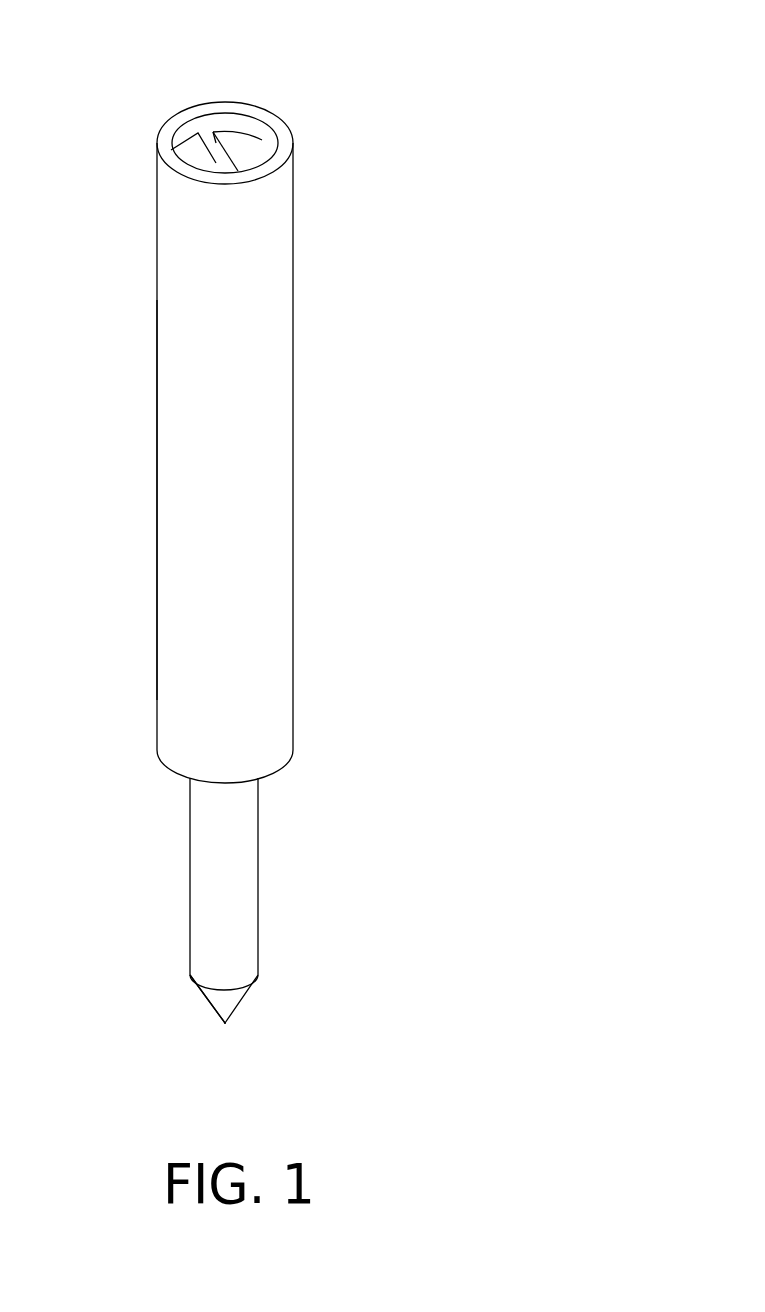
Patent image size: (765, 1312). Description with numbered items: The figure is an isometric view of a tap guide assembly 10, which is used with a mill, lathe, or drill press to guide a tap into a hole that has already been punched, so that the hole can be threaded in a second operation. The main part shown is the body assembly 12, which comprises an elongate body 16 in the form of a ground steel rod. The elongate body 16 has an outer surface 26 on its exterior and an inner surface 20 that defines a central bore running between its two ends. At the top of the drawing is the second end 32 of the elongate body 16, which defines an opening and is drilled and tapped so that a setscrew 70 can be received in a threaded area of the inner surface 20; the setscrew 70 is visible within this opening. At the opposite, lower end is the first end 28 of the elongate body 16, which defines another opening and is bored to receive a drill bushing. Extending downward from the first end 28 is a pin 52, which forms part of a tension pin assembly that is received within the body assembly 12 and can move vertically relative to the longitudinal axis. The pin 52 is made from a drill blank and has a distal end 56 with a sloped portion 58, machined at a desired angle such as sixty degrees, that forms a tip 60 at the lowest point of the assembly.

The tap guide assembly 10 is at (357, 43).
The body assembly 12 is at (329, 391).
The elongate body 16 is at (273, 547).
The inner surface 20 is at (177, 487).
The outer surface 26 is at (177, 325).
The first end 28 is at (157, 750).
The second end 32 is at (163, 133).
The pin 52 is at (233, 895).
The distal end 56 is at (258, 975).
The sloped portion 58 is at (206, 998).
The tip 60 is at (225, 1023).
The setscrew 70 is at (245, 152).